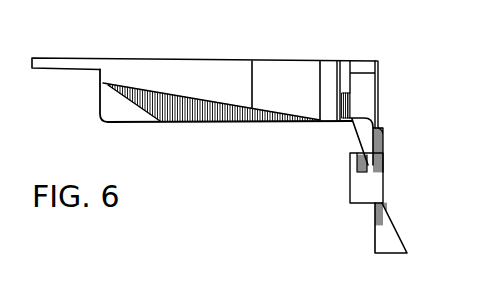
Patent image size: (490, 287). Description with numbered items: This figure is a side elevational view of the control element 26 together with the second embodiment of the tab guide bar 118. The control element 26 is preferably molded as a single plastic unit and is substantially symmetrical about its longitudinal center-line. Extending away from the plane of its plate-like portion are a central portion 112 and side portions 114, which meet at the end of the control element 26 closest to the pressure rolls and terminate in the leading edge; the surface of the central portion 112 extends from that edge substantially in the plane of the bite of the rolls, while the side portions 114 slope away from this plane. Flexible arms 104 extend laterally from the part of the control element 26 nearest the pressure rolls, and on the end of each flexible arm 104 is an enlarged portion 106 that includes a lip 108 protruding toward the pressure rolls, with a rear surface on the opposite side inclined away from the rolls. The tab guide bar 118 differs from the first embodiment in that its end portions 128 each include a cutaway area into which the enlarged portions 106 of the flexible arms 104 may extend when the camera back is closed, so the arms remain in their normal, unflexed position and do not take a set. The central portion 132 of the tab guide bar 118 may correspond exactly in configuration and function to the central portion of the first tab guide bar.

The control element 26 is at (205, 57).
The flexible arm 104 is at (367, 78).
The enlarged portion 106 is at (357, 123).
The lip 108 is at (383, 177).
The central portion 112 is at (135, 113).
The side portion 114 is at (288, 71).
The tab guide bar 118 is at (389, 195).
The end portion 128 is at (362, 187).
The central portion 132 is at (390, 242).